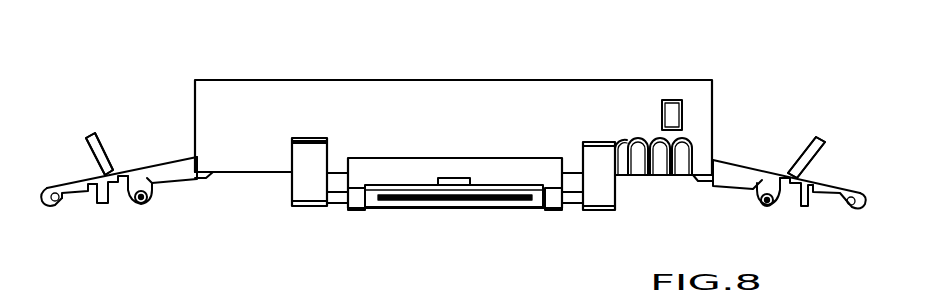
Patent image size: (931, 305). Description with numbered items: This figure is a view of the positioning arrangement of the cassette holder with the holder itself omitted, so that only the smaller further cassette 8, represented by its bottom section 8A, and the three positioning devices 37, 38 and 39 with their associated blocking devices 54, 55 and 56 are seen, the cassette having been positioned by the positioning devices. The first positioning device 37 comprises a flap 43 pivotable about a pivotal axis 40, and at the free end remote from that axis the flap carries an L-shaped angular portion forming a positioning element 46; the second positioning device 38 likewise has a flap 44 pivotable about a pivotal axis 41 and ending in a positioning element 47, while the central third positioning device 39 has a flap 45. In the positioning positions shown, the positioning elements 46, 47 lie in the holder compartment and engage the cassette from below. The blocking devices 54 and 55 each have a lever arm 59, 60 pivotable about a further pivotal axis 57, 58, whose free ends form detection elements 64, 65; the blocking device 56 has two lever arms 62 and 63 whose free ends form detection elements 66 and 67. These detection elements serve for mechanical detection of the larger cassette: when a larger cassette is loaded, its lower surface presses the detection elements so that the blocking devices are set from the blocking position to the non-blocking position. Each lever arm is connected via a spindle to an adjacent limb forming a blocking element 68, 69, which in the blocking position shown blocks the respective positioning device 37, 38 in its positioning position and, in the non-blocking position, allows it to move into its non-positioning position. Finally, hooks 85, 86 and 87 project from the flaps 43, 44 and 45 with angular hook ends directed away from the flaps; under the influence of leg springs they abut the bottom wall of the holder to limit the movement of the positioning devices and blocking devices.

The further cassette 8 is at (569, 77).
The bottom section 8A is at (432, 92).
The positioning device 37 is at (175, 140).
The positioning device 38 is at (723, 143).
The positioning device 39 is at (441, 146).
The pivotal axis 40 is at (55, 201).
The pivotal axis 41 is at (850, 206).
The flap 43 is at (160, 169).
The flap 44 is at (740, 170).
The flap 45 is at (400, 161).
The positioning element 46 is at (204, 179).
The positioning element 47 is at (703, 181).
The blocking device 54 is at (98, 118).
The blocking device 55 is at (794, 139).
The blocking device 56 is at (280, 196).
The further pivotal axis 57 is at (149, 197).
The further pivotal axis 58 is at (759, 199).
The lever arm 59 is at (105, 157).
The lever arm 60 is at (801, 168).
The lever arm 62 is at (313, 195).
The lever arm 63 is at (600, 200).
The detection element 64 is at (90, 137).
The detection element 65 is at (818, 140).
The detection element 66 is at (312, 137).
The detection element 67 is at (602, 141).
The blocking element 68 is at (130, 203).
The blocking element 69 is at (775, 207).
The hook 85 is at (101, 203).
The hook 86 is at (806, 207).
The hook 87 is at (354, 210).